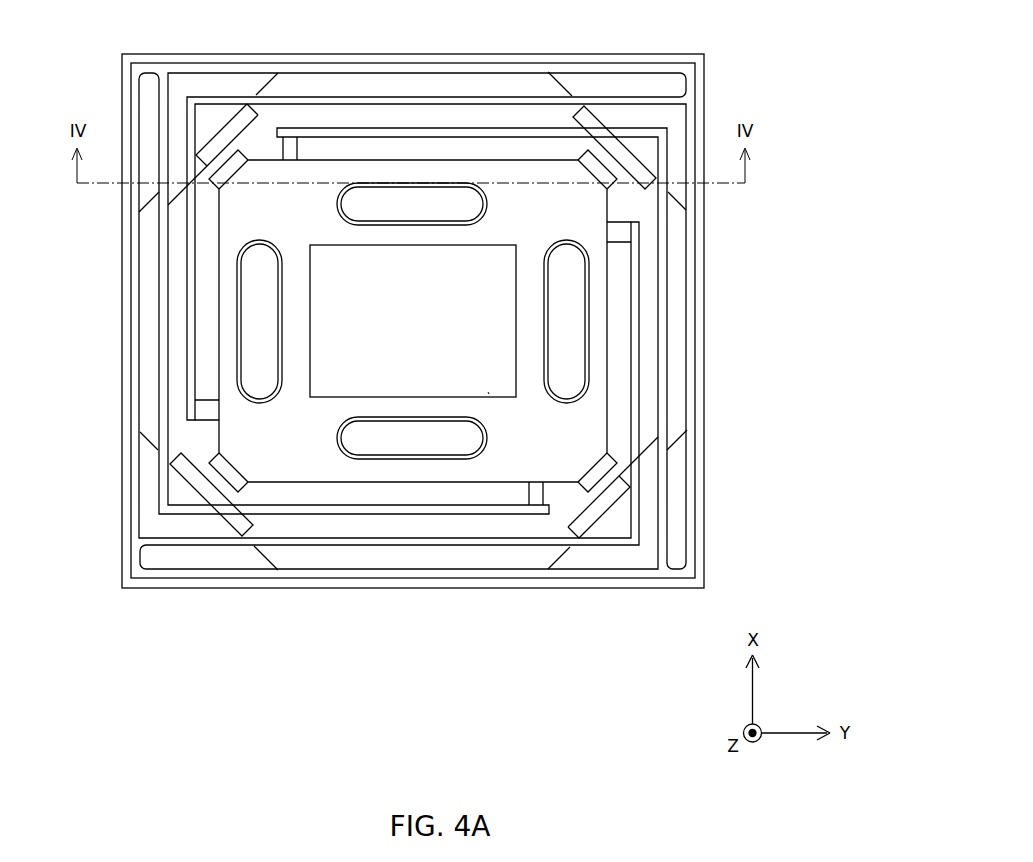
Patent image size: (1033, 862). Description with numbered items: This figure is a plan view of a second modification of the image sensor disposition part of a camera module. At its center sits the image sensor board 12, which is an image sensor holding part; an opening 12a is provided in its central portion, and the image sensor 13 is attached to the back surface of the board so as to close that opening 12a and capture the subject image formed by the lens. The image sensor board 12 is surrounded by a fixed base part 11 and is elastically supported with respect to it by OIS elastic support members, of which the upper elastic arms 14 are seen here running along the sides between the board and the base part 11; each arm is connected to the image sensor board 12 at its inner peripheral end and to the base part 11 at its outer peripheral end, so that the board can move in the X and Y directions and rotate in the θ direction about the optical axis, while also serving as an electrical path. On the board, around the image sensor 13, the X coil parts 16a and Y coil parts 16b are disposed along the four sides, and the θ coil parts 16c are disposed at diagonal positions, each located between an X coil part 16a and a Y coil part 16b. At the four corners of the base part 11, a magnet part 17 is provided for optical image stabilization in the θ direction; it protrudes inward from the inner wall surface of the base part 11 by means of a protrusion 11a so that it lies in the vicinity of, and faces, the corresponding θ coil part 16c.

The base part 11 is at (592, 578).
The protrusion 11a is at (178, 85).
The image sensor board 12 is at (320, 468).
The opening 12a is at (365, 247).
The image sensor 13 is at (488, 392).
The upper elastic arm 14 is at (500, 96).
The X coil part 16a is at (436, 185).
The Y coil part 16b is at (238, 320).
The θ coil part 16c is at (214, 180).
The magnet part 17 is at (238, 118).